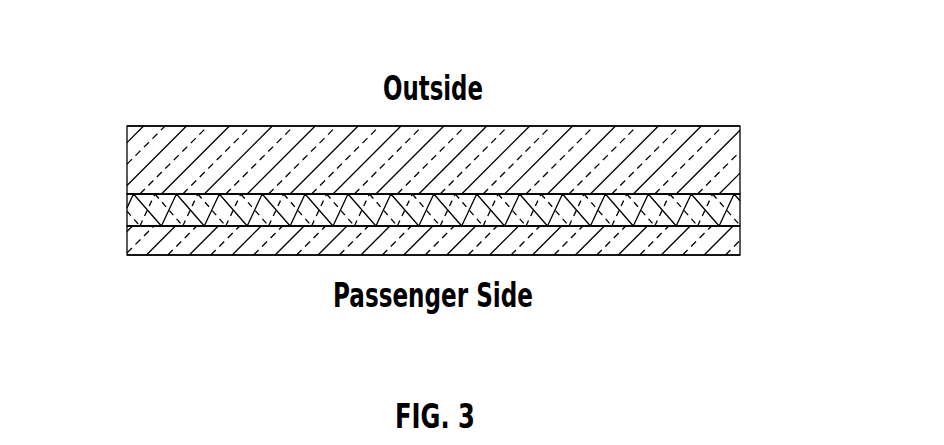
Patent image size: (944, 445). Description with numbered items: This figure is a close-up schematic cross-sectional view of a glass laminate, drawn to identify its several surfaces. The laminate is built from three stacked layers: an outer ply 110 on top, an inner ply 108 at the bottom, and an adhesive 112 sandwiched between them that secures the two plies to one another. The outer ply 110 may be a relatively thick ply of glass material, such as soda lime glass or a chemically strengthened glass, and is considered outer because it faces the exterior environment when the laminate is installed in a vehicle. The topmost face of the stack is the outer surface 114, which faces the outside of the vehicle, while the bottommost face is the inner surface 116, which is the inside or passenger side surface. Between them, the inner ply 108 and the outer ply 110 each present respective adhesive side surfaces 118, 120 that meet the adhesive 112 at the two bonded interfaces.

The inner ply 108 is at (128, 242).
The outer ply 110 is at (130, 172).
The adhesive 112 is at (128, 212).
The outer surface 114 is at (727, 126).
The inner surface 116 is at (737, 248).
The adhesive side surface 118 is at (727, 227).
The adhesive side surface 120 is at (720, 193).